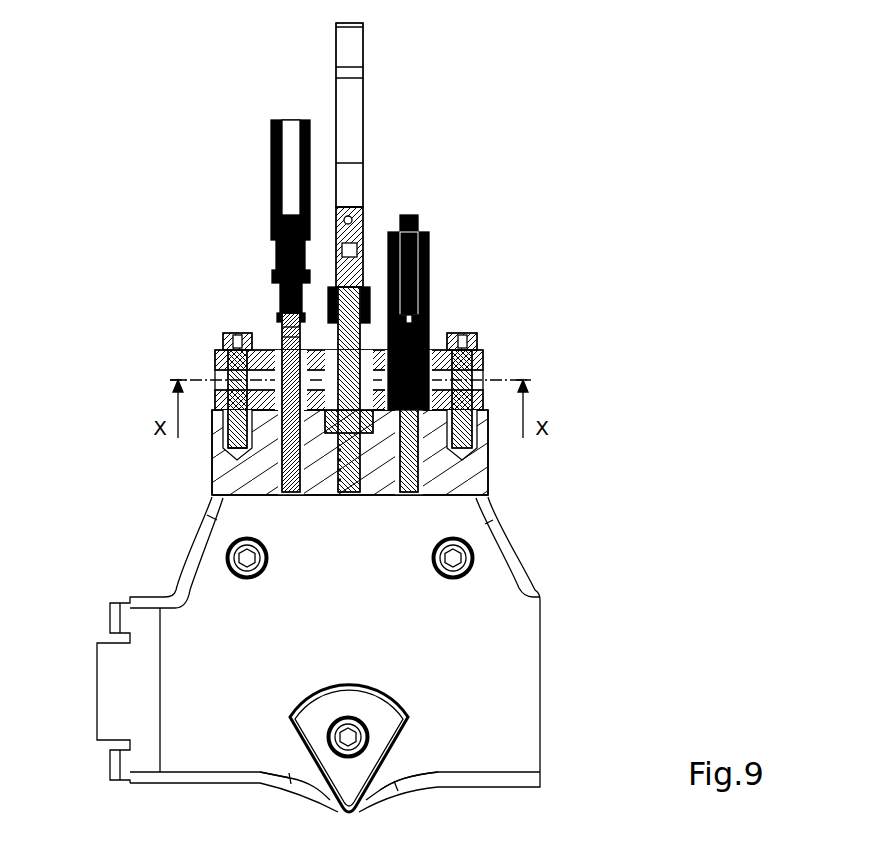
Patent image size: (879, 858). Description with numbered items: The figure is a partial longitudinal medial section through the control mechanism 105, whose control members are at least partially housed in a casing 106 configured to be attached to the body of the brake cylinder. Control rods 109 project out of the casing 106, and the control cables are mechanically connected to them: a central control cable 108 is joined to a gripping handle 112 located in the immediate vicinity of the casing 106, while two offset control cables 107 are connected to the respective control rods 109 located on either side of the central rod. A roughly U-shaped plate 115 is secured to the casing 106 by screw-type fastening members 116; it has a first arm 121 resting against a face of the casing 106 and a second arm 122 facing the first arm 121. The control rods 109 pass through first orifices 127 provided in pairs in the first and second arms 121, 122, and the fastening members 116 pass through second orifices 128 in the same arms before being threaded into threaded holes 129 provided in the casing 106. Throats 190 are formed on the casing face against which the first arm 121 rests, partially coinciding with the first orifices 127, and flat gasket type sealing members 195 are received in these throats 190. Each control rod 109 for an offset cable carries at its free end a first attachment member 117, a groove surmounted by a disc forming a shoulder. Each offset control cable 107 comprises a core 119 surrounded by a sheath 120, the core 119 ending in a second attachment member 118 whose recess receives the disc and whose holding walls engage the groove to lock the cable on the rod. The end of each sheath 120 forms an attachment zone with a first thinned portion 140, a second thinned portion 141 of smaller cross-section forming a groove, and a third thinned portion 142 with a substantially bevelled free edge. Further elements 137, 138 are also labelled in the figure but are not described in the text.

The control mechanism 105 is at (603, 224).
The casing 106 is at (366, 668).
The offset control cables 107 is at (272, 120).
The central control cable 108 is at (363, 171).
The control rods 109 is at (288, 497).
The gripping handle 112 is at (355, 45).
The plate 115 is at (483, 352).
The fastening members 116 is at (223, 335).
The first attachment member 117 is at (277, 313).
The second attachment member 118 is at (280, 327).
The core 119 is at (318, 285).
The sheath 120 is at (272, 152).
The first arm 121 is at (237, 450).
The second arm 122 is at (220, 355).
The first orifices 127 is at (280, 337).
The second orifices 128 is at (220, 373).
The threaded holes 129 is at (213, 460).
The flange 137 is at (286, 815).
The flange 138 is at (397, 815).
The first thinned portion 140 is at (273, 243).
The second thinned portion 141 is at (275, 272).
The third thinned portion 142 is at (277, 303).
The throats 190 is at (248, 497).
The sealing members 195 is at (303, 497).